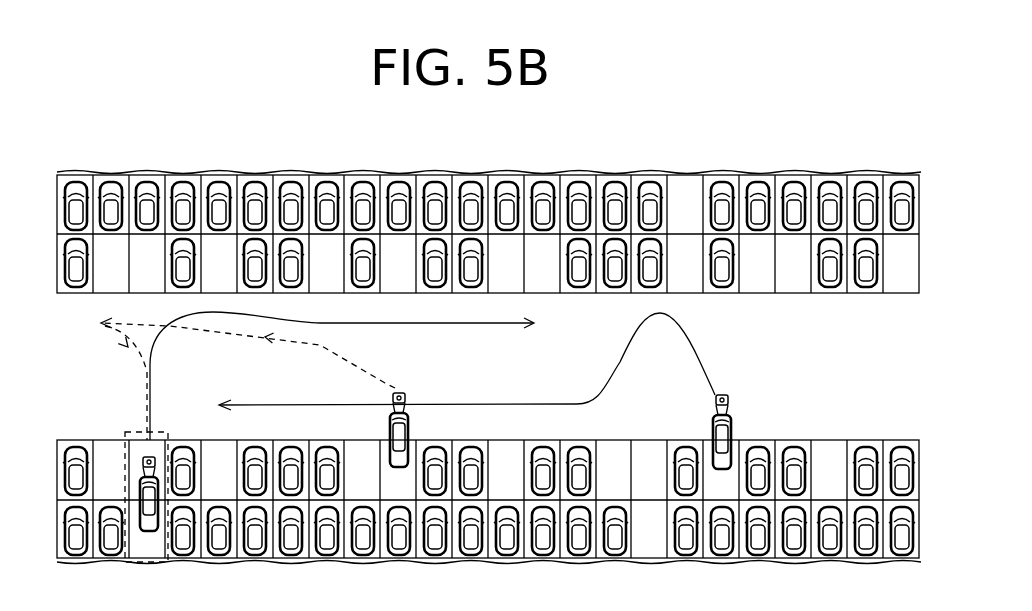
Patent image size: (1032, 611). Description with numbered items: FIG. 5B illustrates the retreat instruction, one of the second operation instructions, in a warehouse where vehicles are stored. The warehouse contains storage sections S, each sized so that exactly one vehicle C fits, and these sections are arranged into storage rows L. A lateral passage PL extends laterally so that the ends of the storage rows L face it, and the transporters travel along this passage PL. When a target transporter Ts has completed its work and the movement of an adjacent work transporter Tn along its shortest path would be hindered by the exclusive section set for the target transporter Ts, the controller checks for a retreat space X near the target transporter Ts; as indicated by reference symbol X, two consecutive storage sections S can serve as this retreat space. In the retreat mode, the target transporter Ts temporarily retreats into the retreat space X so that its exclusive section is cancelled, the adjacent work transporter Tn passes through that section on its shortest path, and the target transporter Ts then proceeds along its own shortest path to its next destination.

The storage section S is at (57, 207).
The storage row L is at (73, 332).
The retreat space X is at (137, 432).
The target transporter Ts is at (152, 455).
The adjacent work transporter Tn is at (713, 412).
The lateral passage PL is at (489, 367).
The vehicle C is at (867, 440).